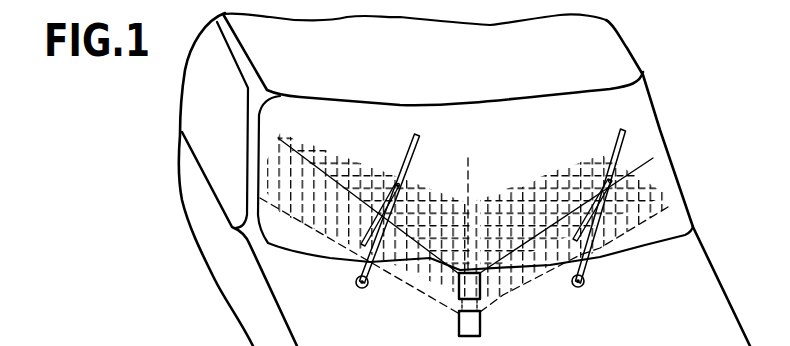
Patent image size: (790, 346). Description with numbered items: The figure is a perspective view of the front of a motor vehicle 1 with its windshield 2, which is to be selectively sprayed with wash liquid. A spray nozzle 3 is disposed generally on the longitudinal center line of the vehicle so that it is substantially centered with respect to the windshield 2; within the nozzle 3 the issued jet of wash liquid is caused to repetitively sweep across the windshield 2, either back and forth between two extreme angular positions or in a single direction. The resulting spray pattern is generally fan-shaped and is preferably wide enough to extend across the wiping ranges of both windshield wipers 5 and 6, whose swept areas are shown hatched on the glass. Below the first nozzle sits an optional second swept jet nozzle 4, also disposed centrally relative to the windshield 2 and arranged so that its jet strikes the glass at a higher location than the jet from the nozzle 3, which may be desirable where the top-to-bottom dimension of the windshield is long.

The motor vehicle 1 is at (686, 145).
The windshield 2 is at (643, 108).
The spray nozzle 3 is at (470, 283).
The second swept jet nozzle 4 is at (470, 318).
The windshield wiper 5 is at (403, 147).
The windshield wiper 6 is at (613, 135).